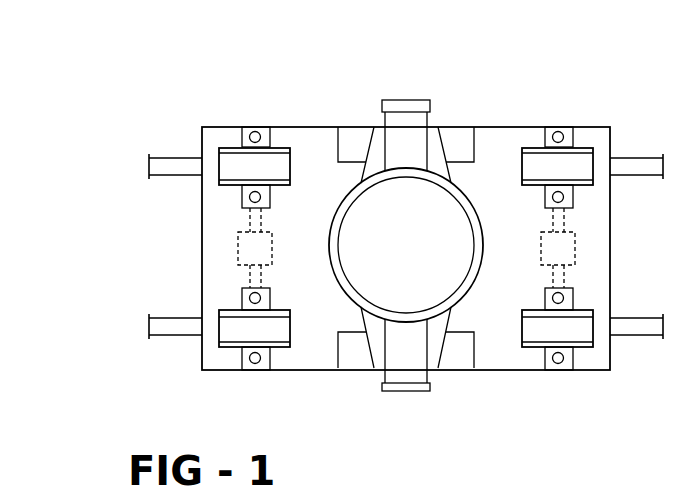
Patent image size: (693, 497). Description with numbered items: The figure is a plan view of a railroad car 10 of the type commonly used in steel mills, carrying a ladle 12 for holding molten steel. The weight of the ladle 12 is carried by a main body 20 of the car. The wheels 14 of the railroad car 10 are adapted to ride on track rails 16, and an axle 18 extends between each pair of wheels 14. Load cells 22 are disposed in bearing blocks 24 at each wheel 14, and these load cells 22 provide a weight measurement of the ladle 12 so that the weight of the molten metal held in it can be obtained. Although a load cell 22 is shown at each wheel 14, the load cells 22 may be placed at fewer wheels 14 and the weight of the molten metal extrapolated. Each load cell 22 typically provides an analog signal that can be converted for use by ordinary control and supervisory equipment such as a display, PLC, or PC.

The railroad car 10 is at (133, 118).
The ladle 12 is at (470, 200).
The wheels 14 is at (414, 247).
The track rails 16 is at (637, 157).
The axle 18 is at (263, 272).
The main body 20 is at (325, 127).
The load cells 22 is at (258, 128).
The bearing blocks 24 is at (243, 139).